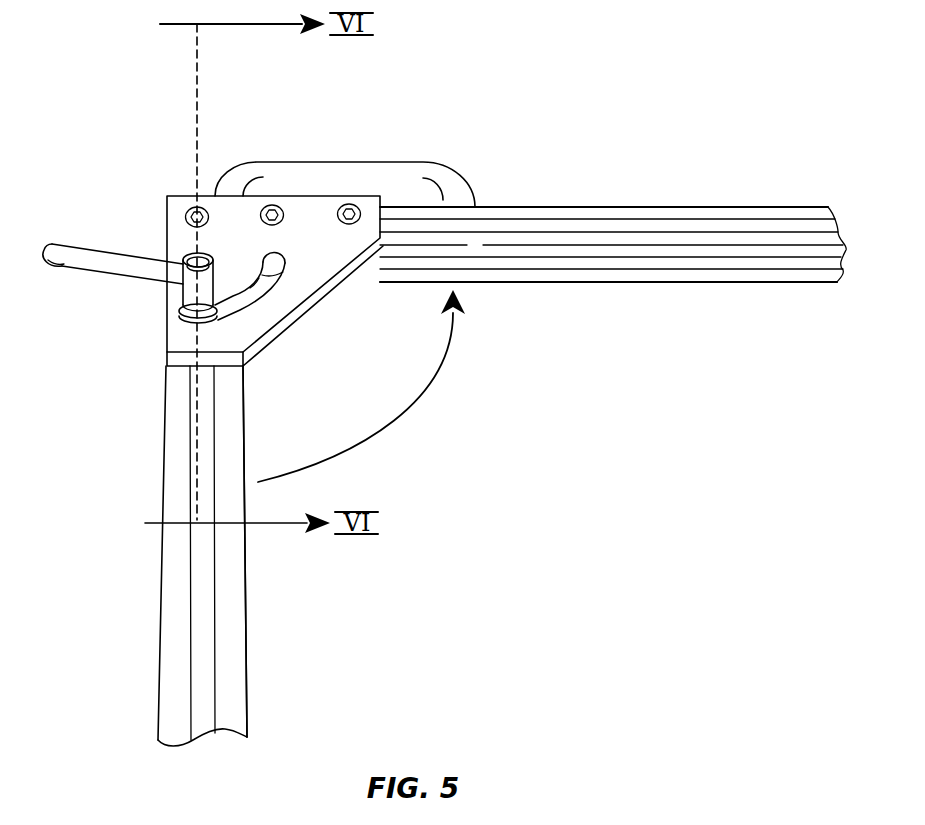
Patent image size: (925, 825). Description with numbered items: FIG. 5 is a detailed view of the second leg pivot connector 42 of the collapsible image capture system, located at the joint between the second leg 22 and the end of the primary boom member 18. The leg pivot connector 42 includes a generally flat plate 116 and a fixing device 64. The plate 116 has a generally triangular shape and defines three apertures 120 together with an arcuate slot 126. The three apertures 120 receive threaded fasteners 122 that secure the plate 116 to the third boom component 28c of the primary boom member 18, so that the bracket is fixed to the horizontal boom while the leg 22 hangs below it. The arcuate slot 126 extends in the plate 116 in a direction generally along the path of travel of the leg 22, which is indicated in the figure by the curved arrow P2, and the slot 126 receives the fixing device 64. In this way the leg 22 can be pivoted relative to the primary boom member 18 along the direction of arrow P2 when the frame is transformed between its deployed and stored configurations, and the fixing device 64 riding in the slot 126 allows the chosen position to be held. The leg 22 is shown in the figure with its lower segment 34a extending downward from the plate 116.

The primary boom member 18 is at (648, 178).
The second leg 22 is at (152, 628).
The third boom component 28c is at (756, 207).
The pole segment 34a is at (243, 596).
The second leg pivot connector 42 is at (160, 221).
The fixing device 64 is at (117, 280).
The flat plate 116 is at (316, 200).
The apertures 120 is at (207, 198).
The threaded fasteners 122 is at (189, 208).
The arcuate slot 126 is at (252, 296).
The arrow indicating path of travel of the leg P2 is at (408, 412).